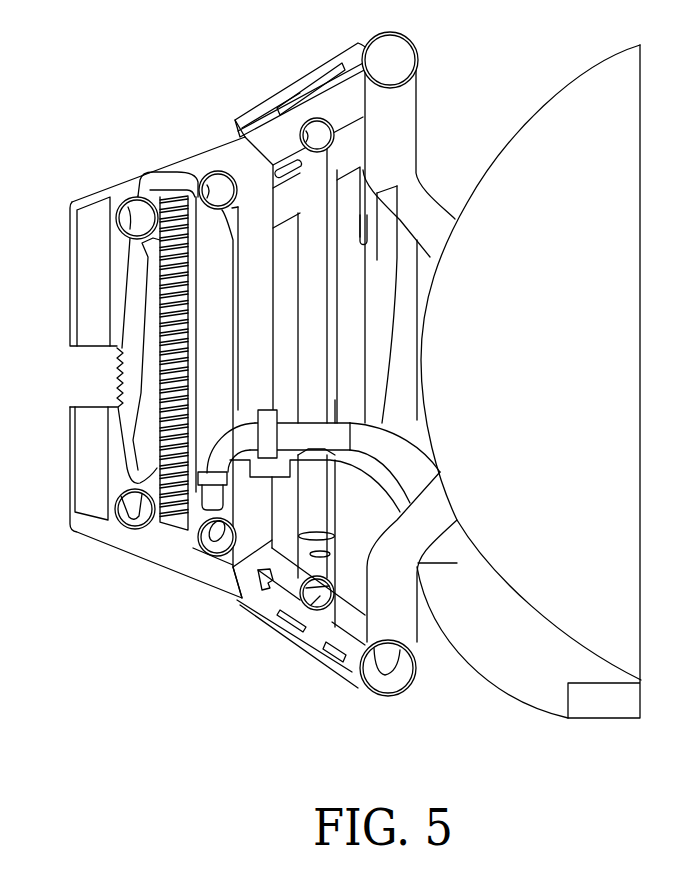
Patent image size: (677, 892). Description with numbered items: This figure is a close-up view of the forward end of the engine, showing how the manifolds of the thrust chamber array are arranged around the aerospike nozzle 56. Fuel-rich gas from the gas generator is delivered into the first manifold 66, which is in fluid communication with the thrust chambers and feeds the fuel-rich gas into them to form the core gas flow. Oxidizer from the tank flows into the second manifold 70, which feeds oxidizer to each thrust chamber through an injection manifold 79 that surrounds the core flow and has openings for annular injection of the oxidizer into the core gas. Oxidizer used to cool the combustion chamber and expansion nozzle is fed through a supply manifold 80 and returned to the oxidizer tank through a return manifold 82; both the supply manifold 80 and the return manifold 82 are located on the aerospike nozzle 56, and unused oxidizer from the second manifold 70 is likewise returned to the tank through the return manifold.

The aerospike nozzle 56 is at (129, 180).
The injection manifold 79 is at (299, 78).
The return manifold 82 is at (122, 520).
The supply manifold 80 is at (204, 552).
The second manifold 70 is at (302, 611).
The first manifold 66 is at (387, 690).